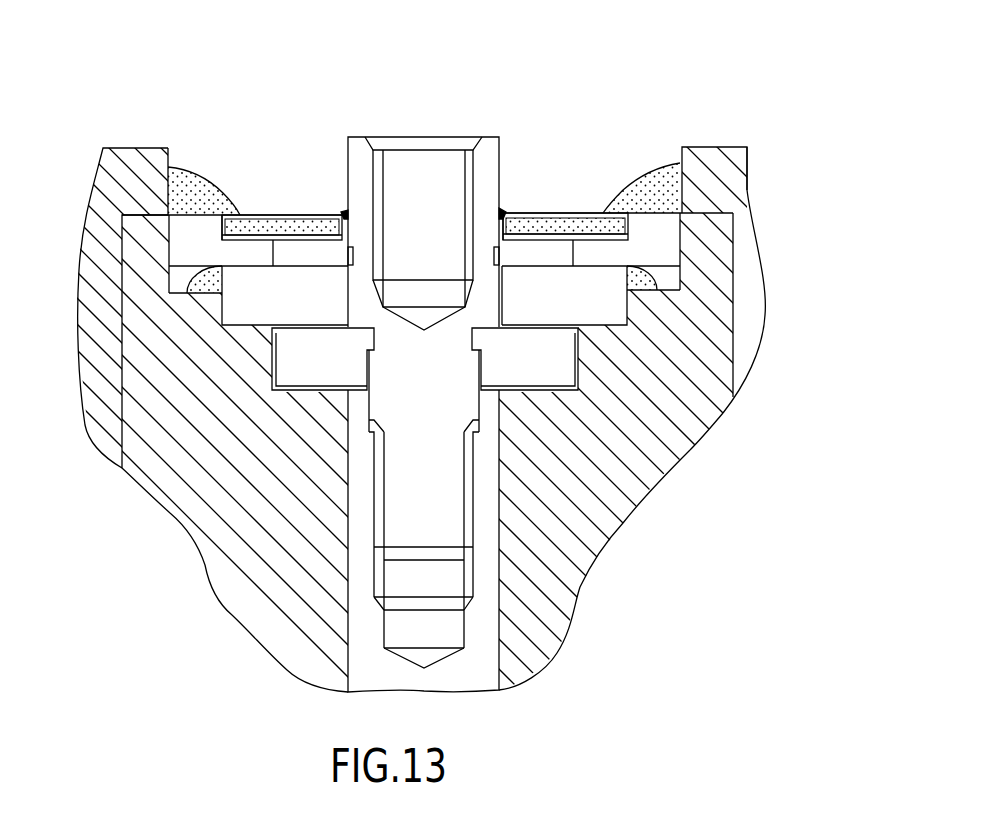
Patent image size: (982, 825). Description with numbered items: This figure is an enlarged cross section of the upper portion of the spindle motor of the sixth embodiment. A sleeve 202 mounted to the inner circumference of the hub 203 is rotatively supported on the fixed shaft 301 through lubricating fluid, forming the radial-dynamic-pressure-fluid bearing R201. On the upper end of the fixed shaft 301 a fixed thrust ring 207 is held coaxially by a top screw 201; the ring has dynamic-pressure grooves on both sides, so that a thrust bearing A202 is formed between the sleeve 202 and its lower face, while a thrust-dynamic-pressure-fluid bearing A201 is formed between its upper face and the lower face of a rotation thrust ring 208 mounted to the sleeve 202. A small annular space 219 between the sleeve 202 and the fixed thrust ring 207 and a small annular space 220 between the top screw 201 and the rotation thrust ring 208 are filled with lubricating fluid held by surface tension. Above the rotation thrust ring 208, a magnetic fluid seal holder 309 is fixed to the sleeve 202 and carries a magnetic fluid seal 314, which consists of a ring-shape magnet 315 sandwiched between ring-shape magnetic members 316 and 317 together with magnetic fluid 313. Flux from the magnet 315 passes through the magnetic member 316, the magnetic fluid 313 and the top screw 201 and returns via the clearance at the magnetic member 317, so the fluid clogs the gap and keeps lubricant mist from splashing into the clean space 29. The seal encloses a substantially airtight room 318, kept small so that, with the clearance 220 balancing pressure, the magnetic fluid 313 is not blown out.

The clean space 29 is at (689, 80).
The top screw 201 is at (485, 172).
The sleeve 202 is at (657, 465).
The hub 203 is at (747, 290).
The fixed thrust ring 207 is at (333, 343).
The rotation thrust ring 208 is at (293, 278).
The small annular space 219 is at (715, 407).
The small annular space 220 is at (503, 297).
The fixed shaft 301 is at (483, 682).
The magnetic fluid seal holder 309 is at (652, 233).
The magnetic fluid 313 is at (502, 212).
The magnetic fluid seal 314 is at (548, 230).
The ring-shape magnet 315 is at (578, 216).
The ring-shape magnetic member 316 is at (583, 217).
The ring-shape magnetic member 317 is at (635, 267).
The room 318 is at (506, 220).
The thrust-dynamic-pressure-fluid bearing A201 is at (270, 392).
The thrust bearing A202 is at (347, 398).
The radial-dynamic-pressure-fluid bearing R201 is at (270, 642).